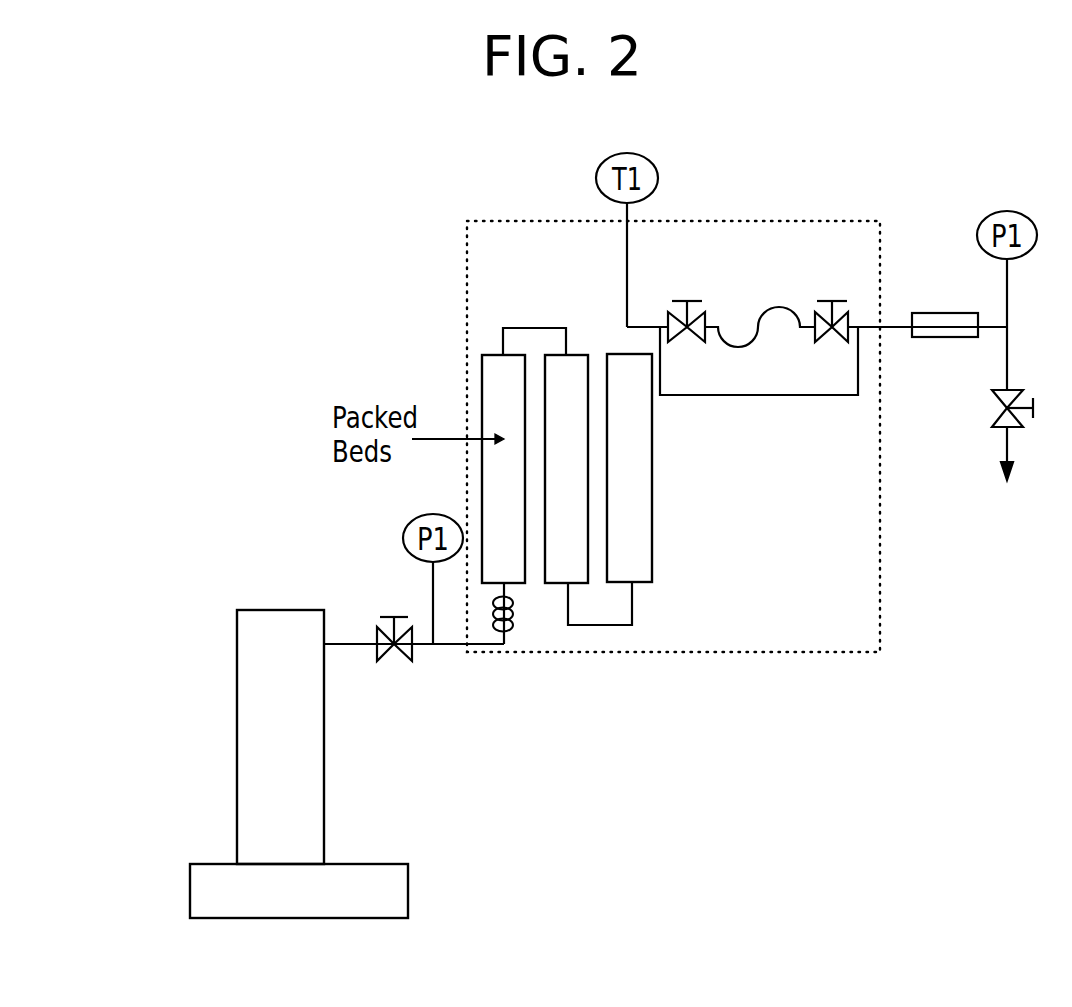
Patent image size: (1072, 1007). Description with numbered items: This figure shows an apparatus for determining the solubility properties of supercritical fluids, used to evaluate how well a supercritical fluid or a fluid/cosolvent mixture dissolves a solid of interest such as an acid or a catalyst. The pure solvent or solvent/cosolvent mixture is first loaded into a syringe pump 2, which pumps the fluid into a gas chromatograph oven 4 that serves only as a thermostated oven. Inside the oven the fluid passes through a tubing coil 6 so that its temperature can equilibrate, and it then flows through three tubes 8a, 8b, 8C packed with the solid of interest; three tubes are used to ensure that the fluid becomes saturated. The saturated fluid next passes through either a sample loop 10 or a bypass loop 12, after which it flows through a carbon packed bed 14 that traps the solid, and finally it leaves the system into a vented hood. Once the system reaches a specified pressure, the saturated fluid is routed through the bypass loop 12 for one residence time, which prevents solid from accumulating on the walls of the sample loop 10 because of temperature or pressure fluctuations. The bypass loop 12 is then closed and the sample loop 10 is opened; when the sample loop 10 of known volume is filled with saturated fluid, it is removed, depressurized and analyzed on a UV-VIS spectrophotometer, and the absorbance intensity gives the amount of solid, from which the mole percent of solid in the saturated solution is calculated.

The syringe pump 2 is at (260, 780).
The gas chromatograph oven 4 is at (740, 650).
The tubing coil 6 is at (514, 600).
The tube packed with solid 8a is at (503, 383).
The tube packed with solid 8b is at (558, 465).
The tube packed with solid 8C is at (645, 578).
The sample loop 10 is at (757, 335).
The bypass loop 12 is at (730, 395).
The carbon packed bed 14 is at (937, 337).